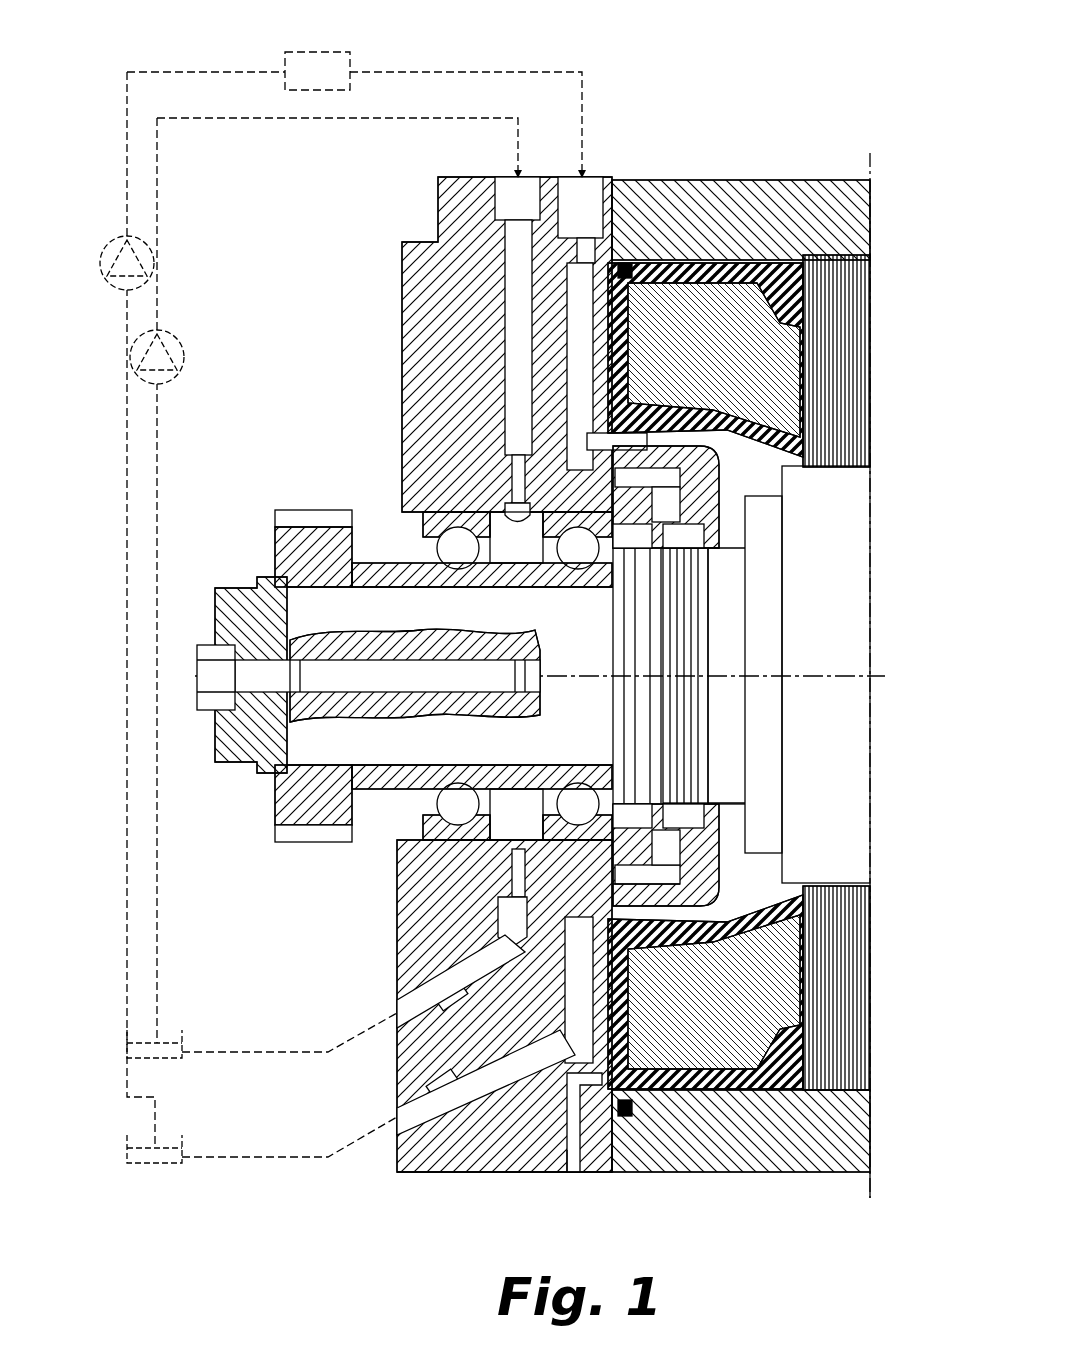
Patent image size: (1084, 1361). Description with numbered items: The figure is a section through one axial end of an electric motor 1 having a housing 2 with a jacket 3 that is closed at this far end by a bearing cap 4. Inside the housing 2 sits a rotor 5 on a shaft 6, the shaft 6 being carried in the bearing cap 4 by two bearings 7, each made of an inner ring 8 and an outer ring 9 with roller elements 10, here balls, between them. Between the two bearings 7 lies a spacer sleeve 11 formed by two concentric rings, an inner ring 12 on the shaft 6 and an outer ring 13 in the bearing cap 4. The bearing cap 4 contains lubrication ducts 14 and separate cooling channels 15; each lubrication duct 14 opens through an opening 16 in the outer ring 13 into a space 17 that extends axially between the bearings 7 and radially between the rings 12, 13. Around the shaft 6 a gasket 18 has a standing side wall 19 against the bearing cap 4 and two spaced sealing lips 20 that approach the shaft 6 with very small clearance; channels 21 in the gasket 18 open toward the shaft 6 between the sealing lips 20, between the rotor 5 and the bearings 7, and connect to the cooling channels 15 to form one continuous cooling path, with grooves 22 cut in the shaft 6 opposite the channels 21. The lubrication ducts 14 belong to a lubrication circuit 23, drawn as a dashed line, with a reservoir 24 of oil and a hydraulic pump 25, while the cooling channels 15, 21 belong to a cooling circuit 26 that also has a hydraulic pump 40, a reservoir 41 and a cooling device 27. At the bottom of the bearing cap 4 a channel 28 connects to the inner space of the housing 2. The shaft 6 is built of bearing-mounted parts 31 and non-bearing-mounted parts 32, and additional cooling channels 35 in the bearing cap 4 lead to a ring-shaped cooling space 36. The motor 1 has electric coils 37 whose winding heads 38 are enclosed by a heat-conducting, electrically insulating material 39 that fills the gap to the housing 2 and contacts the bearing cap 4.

The electric motor 1 is at (752, 103).
The housing 2 is at (805, 178).
The jacket 3 is at (860, 228).
The bearing cap 4 is at (395, 348).
The rotor 5 is at (825, 753).
The shaft 6 is at (355, 740).
The bearings 7 is at (520, 860).
The inner ring 8 is at (420, 775).
The outer ring 9 is at (525, 525).
The roller elements 10 is at (690, 793).
The spacer sleeve 11 is at (500, 553).
The inner ring of spacer sleeve 12 is at (440, 850).
The outer ring of spacer sleeve 13 is at (640, 600).
The lubrication ducts 14 is at (515, 300).
The cooling channels 15 is at (582, 270).
The opening 16 is at (690, 860).
The space 17 is at (640, 800).
The gasket 18 is at (706, 280).
The standing side wall 19 is at (760, 935).
The sealing lips 20 is at (700, 812).
The channels 21 is at (815, 492).
The grooves 22 is at (690, 640).
The lubrication circuit 23 is at (165, 205).
The reservoir 24 is at (185, 1052).
The hydraulic pump 25 is at (135, 365).
The cooling circuit 26 is at (437, 66).
The cooling device 27 is at (350, 80).
The channel 28 is at (600, 1165).
The bearing-mounted parts 31 is at (320, 745).
The non-bearing-mounted parts 32 is at (830, 540).
The additional cooling channels 35 is at (425, 1160).
The ring-shaped cooling space 36 is at (525, 1165).
The electric coils 37 is at (790, 385).
The winding heads 38 is at (666, 440).
The heat-conducting and electrically insulating material 39 is at (790, 300).
The hydraulic pump 40 is at (152, 262).
The reservoir 41 is at (155, 1165).